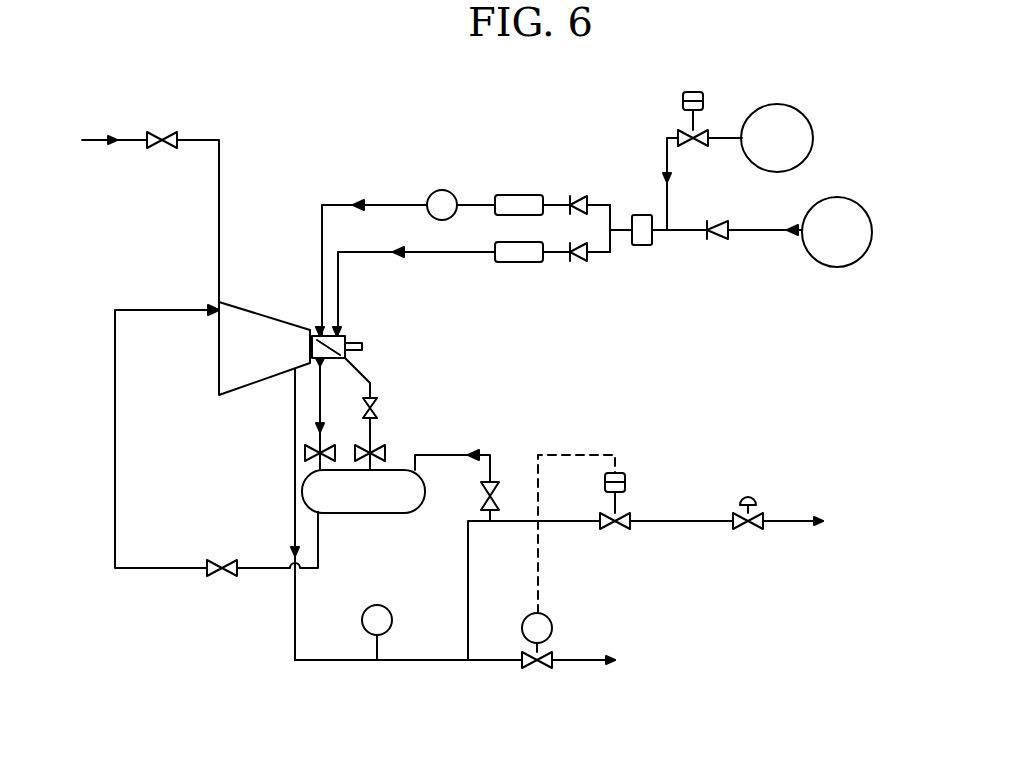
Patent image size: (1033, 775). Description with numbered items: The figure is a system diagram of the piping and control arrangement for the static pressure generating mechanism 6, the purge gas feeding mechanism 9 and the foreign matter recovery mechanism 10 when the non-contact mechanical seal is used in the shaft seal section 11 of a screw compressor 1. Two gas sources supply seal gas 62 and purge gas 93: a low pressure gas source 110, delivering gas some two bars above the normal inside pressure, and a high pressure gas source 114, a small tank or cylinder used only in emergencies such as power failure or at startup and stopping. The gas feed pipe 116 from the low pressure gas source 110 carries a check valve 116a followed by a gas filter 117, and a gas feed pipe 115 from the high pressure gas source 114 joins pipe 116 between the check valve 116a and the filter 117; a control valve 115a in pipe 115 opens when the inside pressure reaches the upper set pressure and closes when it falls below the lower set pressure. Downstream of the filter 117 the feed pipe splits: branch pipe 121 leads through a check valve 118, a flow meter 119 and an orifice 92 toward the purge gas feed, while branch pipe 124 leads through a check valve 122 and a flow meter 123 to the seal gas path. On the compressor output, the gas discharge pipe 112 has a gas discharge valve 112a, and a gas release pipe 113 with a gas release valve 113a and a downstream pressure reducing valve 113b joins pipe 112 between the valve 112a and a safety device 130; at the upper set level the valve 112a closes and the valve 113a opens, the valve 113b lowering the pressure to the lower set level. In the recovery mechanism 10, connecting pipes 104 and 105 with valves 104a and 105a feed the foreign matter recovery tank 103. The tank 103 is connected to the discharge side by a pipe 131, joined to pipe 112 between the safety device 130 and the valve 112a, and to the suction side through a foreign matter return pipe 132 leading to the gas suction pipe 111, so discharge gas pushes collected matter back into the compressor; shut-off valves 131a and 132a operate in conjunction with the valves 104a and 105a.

The screw compressor 1 is at (228, 350).
The gas suction pipe 111 is at (219, 178).
The branch pipe 121 is at (322, 232).
The purge gas 93 is at (352, 200).
The orifice 92 is at (441, 190).
The purge gas feeding mechanism 9 is at (480, 190).
The flow meter 119 is at (523, 195).
The check valve 118 is at (578, 195).
The branch pipe 124 is at (441, 252).
The seal gas 62 is at (400, 255).
The static pressure generating mechanism 6 is at (480, 262).
The flow meter 123 is at (519, 262).
The check valve 122 is at (580, 262).
The gas filter 117 is at (640, 245).
The check valve 116a is at (716, 245).
The gas feed pipe 116 is at (762, 232).
The low pressure gas source 110 is at (833, 267).
The gas feed pipe 115 is at (718, 142).
The control valve 115a is at (703, 97).
The high pressure gas source 114 is at (813, 140).
The shaft seal section 11 is at (345, 337).
The connecting pipe 104 is at (320, 418).
The valve 104a is at (305, 455).
The connecting pipe 105 is at (360, 372).
The valve 105a is at (297, 470).
The foreign matter recovery tank 103 is at (368, 513).
The foreign matter recovery mechanism 10 is at (402, 463).
The pipe 131 is at (490, 455).
The shut-off valve 131a is at (497, 485).
The foreign matter return pipe 132 is at (115, 425).
The shut-off valve 132a is at (207, 575).
The gas discharge pipe 112 is at (585, 665).
The safety device 130 is at (392, 622).
The gas discharge valve 112a is at (552, 628).
The gas release pipe 113 is at (682, 525).
The gas release valve 113a is at (627, 483).
The pressure reducing valve 113b is at (755, 498).